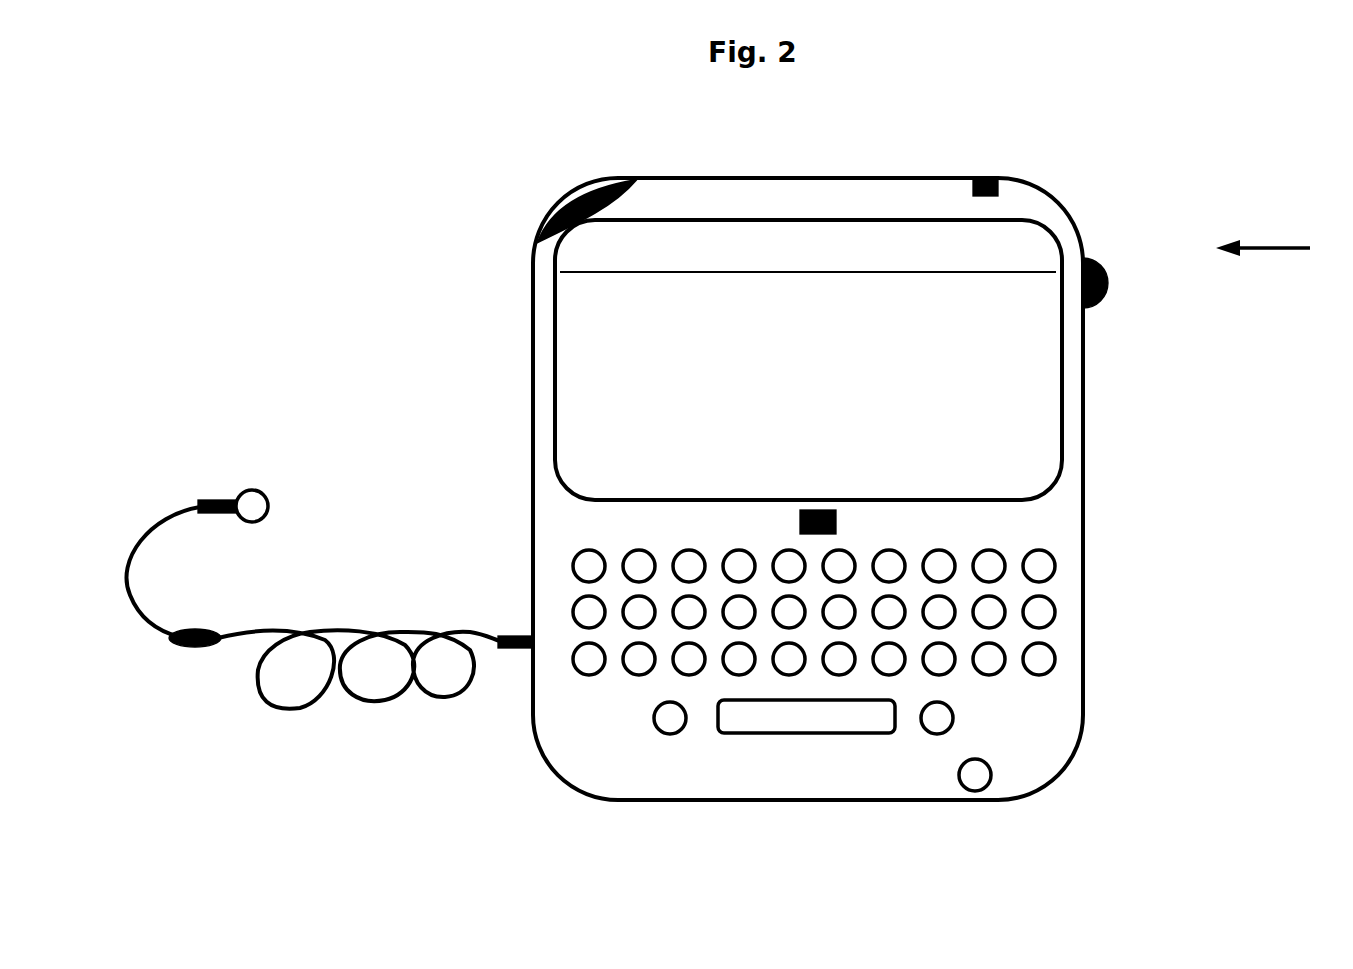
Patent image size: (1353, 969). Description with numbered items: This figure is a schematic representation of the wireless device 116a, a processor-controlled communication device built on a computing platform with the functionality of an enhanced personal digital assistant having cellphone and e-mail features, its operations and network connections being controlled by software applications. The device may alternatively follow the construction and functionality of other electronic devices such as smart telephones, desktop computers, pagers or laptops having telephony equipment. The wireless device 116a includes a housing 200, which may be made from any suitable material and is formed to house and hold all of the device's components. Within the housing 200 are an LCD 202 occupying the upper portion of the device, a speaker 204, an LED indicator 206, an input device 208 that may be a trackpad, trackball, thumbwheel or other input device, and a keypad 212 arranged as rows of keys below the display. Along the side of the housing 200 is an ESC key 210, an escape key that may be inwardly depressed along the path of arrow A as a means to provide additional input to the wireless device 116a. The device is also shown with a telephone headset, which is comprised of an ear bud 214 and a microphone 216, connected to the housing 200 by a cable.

The wireless device 116a is at (729, 850).
The housing 200 is at (1043, 720).
The LCD 202 is at (637, 360).
The speaker 204 is at (545, 210).
The LED indicator 206 is at (1000, 185).
The input device 208 is at (847, 522).
The ESC key 210 is at (1125, 280).
The keypad 212 is at (1043, 535).
The ear bud 214 is at (278, 500).
The microphone 216 is at (220, 628).